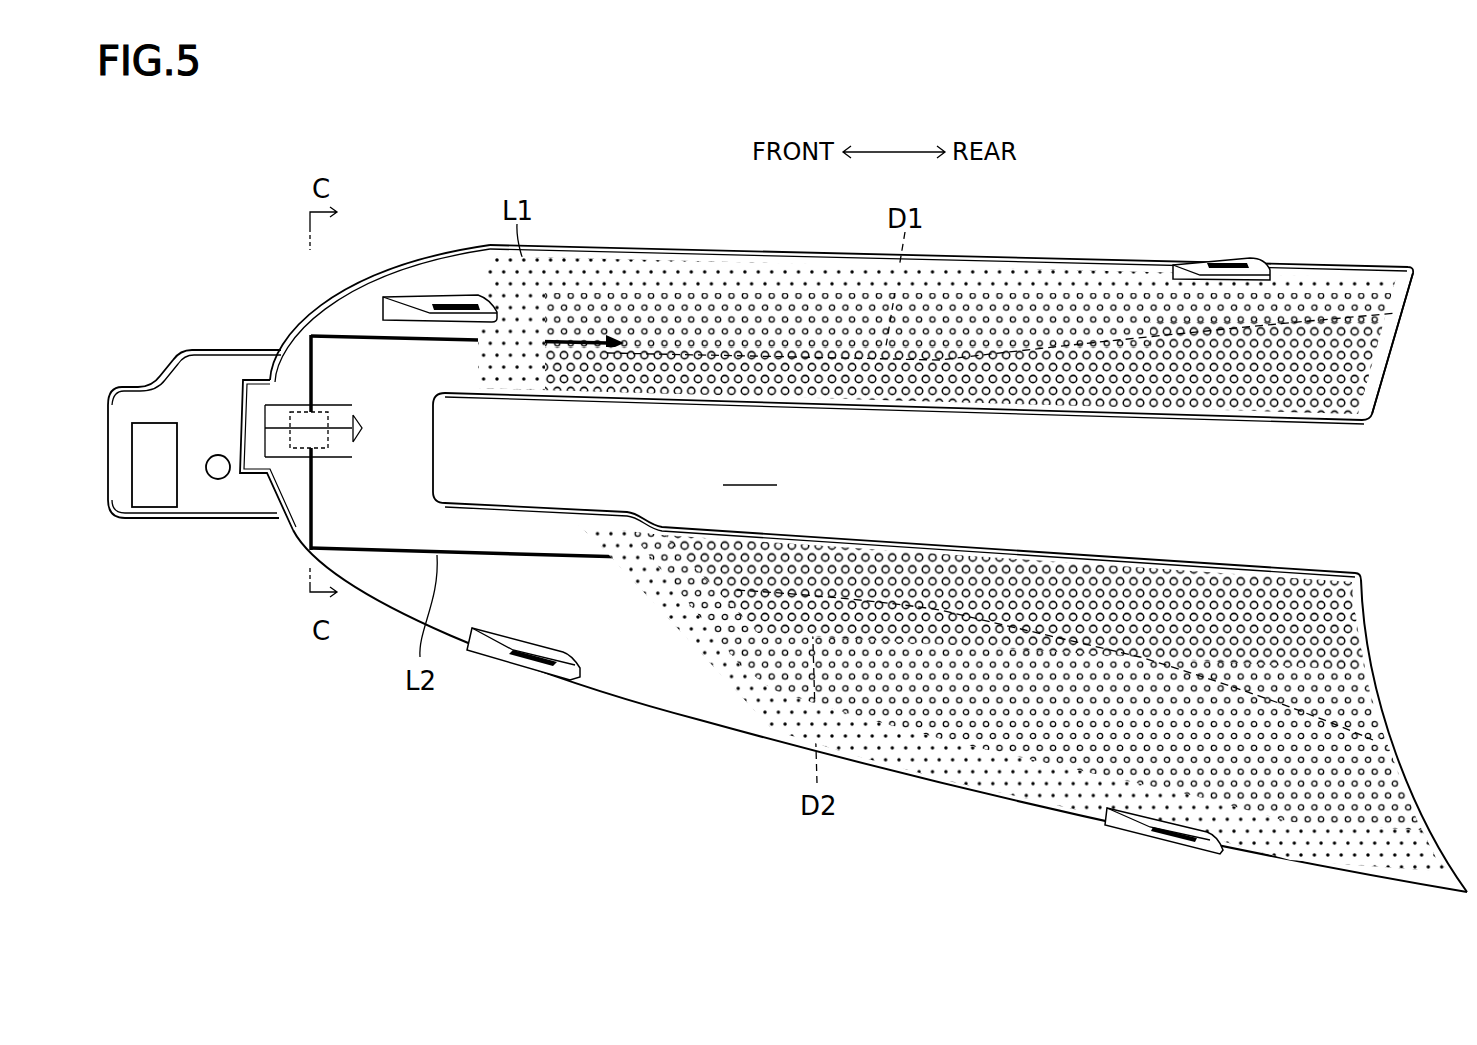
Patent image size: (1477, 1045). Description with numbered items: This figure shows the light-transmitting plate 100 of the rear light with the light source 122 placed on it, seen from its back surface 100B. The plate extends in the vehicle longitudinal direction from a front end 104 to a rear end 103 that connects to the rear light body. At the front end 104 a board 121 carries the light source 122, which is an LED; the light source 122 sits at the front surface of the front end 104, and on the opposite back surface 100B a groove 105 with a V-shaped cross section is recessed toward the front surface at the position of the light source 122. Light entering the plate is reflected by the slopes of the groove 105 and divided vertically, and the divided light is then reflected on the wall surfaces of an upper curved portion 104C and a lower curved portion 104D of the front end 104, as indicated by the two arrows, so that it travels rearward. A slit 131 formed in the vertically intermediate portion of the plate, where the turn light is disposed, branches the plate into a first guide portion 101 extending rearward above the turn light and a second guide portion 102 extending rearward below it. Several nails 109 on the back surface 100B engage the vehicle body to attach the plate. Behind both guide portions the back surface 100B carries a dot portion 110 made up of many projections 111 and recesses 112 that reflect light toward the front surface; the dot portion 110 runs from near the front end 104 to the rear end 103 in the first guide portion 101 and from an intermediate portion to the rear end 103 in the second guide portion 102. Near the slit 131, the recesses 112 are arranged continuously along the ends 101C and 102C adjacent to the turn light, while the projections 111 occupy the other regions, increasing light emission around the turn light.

The light-transmitting plate 100 is at (580, 196).
The back surface 100B is at (513, 525).
The first guide portion 101 is at (650, 300).
The end of first guide portion 101C is at (953, 412).
The second guide portion 102 is at (748, 688).
The end of second guide portion 102C is at (957, 545).
The rear end 103 is at (1373, 368).
The front end 104 is at (347, 387).
The upper curved portion 104C is at (309, 332).
The lower curved portion 104D is at (300, 552).
The groove 105 is at (338, 415).
The nails 109 is at (450, 313).
The dot portion 110 is at (973, 570).
The projections 111 is at (1358, 295).
The recesses 112 is at (1352, 412).
The board 121 is at (208, 365).
The light source 122 is at (303, 410).
The slit 131 is at (894, 483).